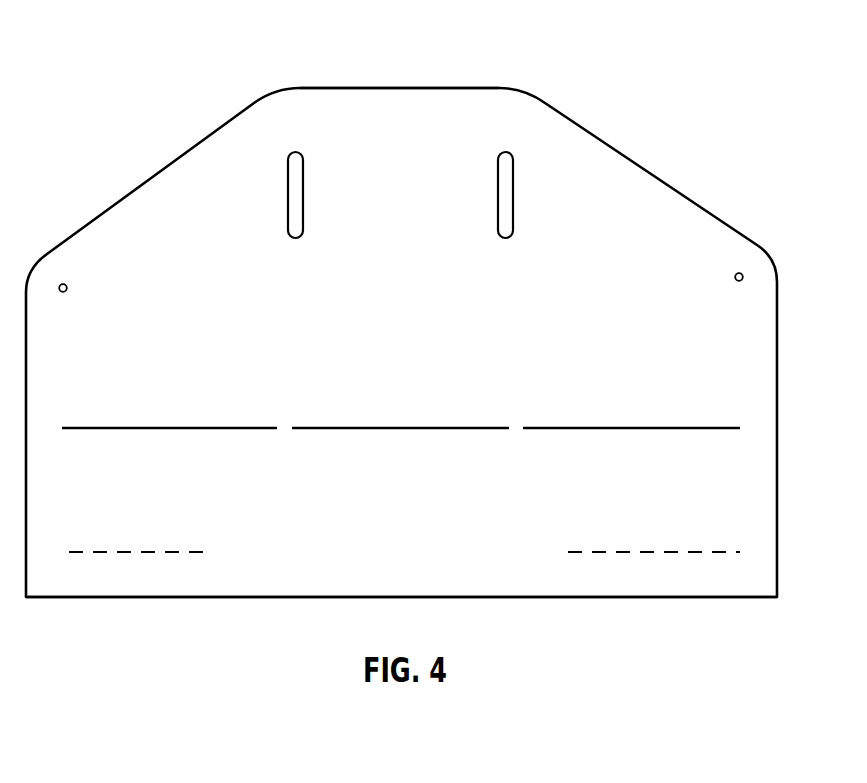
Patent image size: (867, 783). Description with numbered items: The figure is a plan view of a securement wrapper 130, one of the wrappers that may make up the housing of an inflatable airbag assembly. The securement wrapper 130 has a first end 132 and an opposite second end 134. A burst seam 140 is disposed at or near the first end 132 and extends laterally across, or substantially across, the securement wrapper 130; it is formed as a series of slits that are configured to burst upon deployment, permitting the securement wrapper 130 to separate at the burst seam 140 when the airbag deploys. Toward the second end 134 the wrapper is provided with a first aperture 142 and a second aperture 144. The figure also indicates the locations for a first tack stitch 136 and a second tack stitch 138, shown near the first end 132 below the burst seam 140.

The securement wrapper 130 is at (156, 58).
The first end 132 is at (413, 597).
The second end 134 is at (400, 88).
The first tack stitch 136 is at (657, 550).
The second tack stitch 138 is at (139, 550).
The burst seam 140 is at (568, 429).
The first aperture 142 is at (498, 195).
The second aperture 144 is at (303, 195).